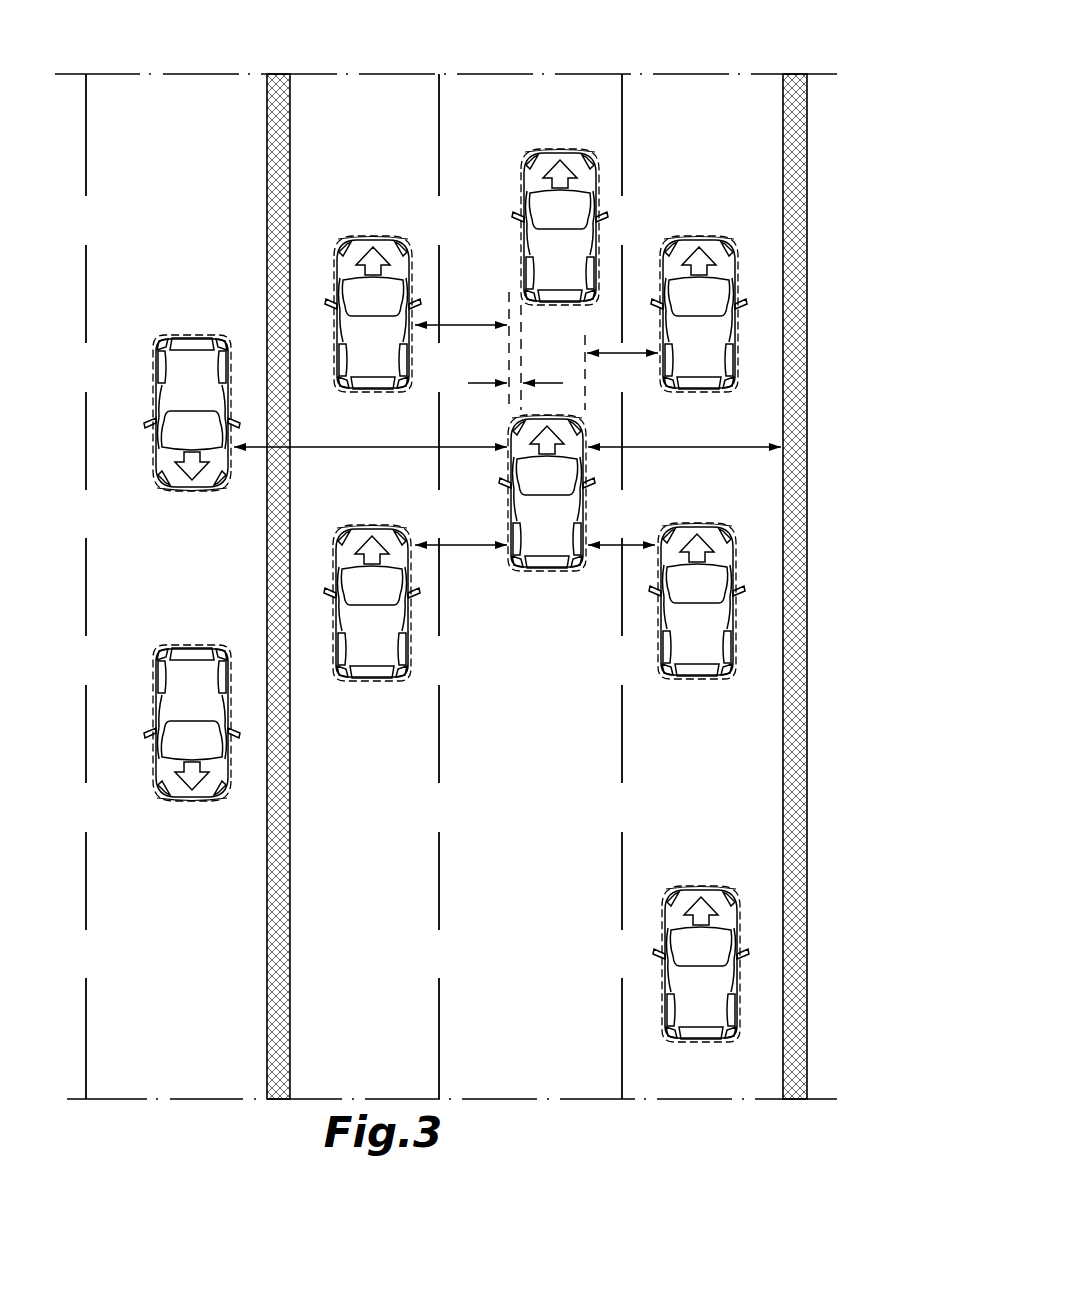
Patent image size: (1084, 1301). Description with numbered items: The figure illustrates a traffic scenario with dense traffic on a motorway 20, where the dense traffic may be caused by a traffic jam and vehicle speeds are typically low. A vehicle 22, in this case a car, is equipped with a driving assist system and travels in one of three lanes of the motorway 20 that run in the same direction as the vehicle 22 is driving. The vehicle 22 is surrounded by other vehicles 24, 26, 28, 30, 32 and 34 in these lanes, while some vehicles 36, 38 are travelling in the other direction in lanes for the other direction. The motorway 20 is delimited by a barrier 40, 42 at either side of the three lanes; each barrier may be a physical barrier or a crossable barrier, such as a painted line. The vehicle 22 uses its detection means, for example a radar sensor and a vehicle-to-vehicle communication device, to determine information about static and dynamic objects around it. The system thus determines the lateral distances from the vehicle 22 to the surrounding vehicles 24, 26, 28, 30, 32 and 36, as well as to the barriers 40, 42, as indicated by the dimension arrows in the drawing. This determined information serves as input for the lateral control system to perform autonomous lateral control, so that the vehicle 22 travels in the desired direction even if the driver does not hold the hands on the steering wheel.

The motorway 20 is at (682, 97).
The vehicle 22 is at (547, 493).
The vehicle 24 is at (372, 603).
The vehicle 26 is at (373, 314).
The vehicle 28 is at (560, 227).
The vehicle 30 is at (699, 314).
The vehicle 32 is at (697, 601).
The vehicle 34 is at (701, 964).
The vehicle 36 is at (192, 413).
The vehicle 38 is at (192, 723).
The barrier 40 is at (283, 943).
The barrier 42 is at (795, 803).